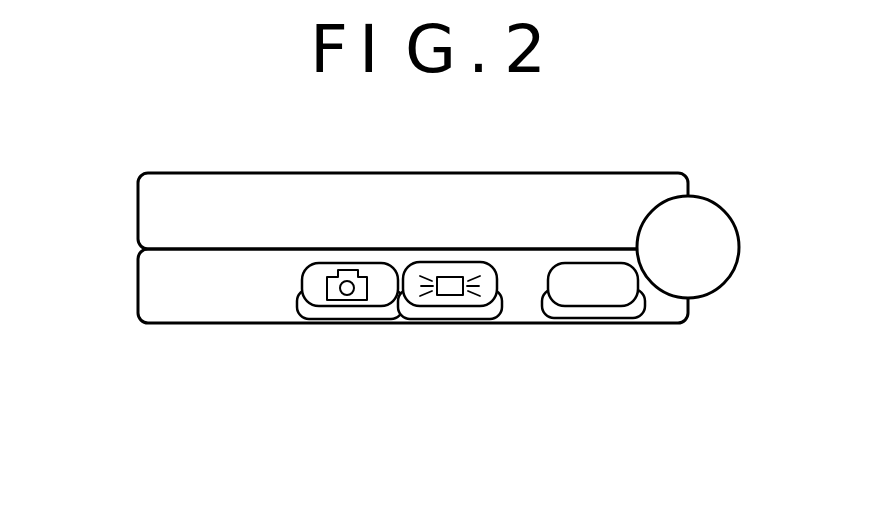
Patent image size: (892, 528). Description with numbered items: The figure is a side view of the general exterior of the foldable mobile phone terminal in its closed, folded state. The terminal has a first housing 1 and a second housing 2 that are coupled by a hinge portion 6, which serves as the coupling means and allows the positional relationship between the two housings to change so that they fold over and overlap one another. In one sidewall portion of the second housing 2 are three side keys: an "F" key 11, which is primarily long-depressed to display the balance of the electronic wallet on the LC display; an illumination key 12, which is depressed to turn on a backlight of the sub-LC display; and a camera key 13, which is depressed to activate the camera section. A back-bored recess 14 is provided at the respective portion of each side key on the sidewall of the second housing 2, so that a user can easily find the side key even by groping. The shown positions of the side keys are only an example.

The first housing 1 is at (138, 217).
The second housing 2 is at (138, 293).
The hinge portion 6 is at (723, 250).
The "F" key 11 is at (600, 306).
The illumination key 12 is at (447, 307).
The camera key 13 is at (350, 307).
The back-bored recess 14 is at (292, 306).